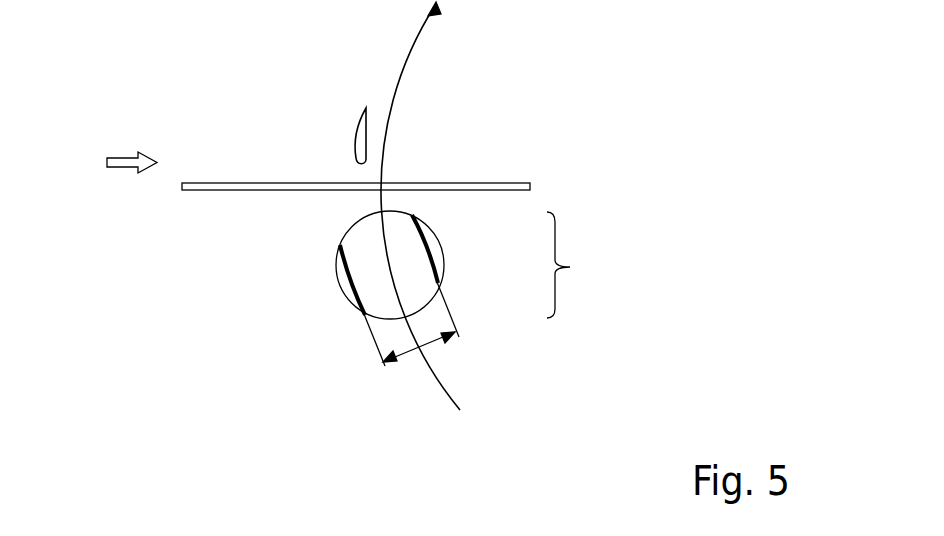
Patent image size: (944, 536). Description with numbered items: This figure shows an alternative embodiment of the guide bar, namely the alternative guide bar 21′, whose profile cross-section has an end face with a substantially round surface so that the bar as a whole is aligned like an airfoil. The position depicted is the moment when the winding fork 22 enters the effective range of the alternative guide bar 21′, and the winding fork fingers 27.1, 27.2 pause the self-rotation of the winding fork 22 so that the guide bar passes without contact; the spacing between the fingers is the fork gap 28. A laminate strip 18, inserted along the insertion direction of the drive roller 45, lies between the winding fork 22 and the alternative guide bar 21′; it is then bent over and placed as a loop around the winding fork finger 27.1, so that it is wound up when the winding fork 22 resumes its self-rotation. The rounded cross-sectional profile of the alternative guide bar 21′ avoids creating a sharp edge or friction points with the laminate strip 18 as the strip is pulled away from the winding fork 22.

The insertion direction of the drive roller 45 is at (122, 159).
The alternative guide bar 21′ is at (363, 148).
The laminate strip 18 is at (518, 183).
The winding fork 22 is at (474, 265).
The winding fork finger 27.1 is at (348, 284).
The winding fork finger 27.2 is at (433, 248).
The fork gap 28 is at (412, 348).